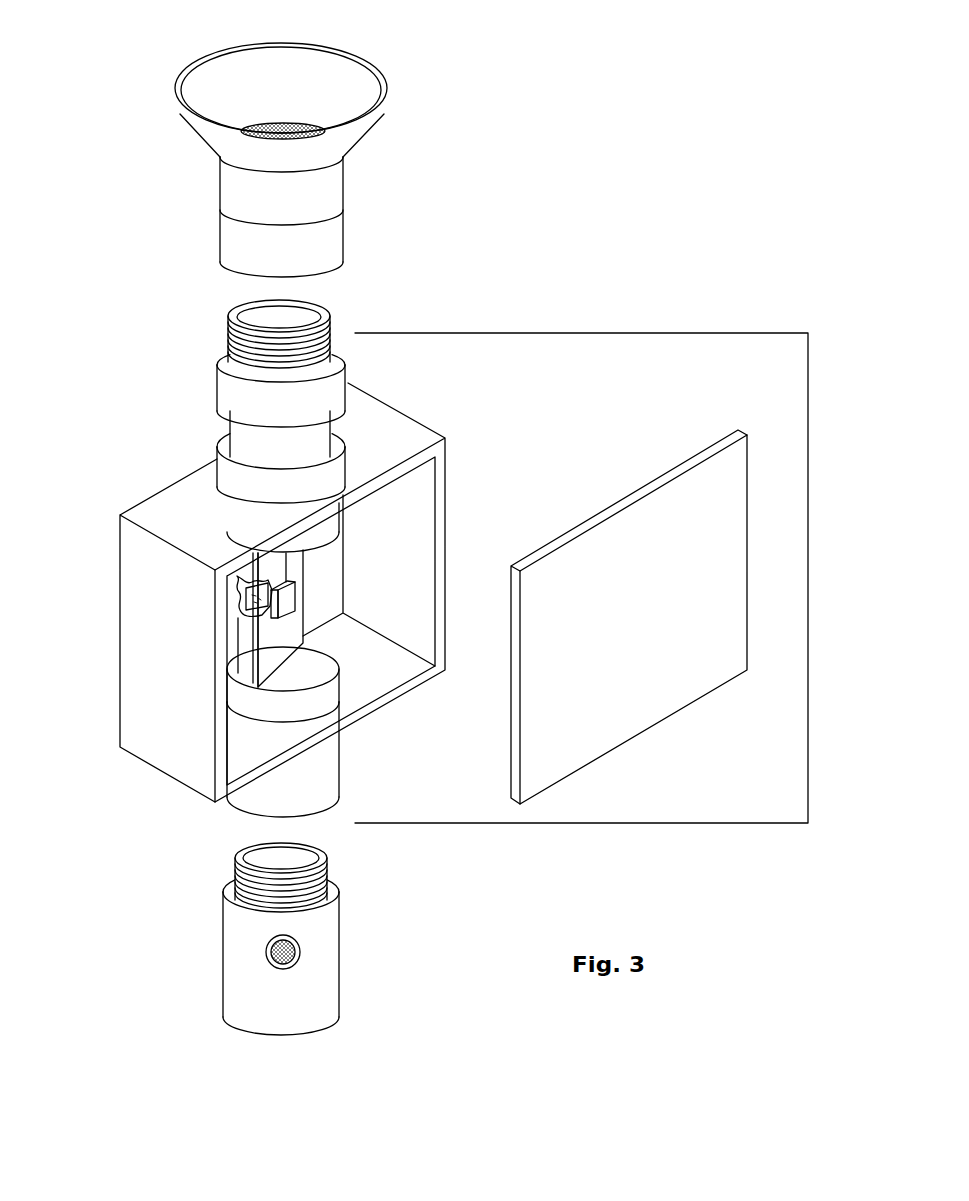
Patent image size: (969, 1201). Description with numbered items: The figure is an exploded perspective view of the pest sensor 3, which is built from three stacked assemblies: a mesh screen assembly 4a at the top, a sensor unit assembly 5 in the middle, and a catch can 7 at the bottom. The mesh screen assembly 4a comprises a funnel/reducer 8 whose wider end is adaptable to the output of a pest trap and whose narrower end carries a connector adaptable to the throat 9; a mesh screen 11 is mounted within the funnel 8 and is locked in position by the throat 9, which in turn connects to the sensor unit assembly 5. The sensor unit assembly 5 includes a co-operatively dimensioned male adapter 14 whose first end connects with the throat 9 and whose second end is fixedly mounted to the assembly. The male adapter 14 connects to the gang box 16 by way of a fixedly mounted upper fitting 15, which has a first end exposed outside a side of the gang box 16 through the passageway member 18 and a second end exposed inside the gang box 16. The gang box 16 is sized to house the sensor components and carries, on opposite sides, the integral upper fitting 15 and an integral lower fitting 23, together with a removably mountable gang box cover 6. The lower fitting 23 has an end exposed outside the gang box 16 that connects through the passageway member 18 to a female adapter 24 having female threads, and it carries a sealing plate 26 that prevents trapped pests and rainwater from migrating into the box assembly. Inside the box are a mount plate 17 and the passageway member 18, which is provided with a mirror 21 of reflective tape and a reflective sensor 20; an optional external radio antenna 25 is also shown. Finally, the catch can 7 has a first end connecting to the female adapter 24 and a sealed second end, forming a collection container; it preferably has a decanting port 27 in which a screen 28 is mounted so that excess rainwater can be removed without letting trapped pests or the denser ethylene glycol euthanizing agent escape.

The sensor 3 is at (495, 257).
The mesh screen assembly 4a is at (377, 130).
The sensor unit assembly 5 is at (810, 551).
The gang box cover 6 is at (622, 731).
The catch can 7 is at (320, 995).
The funnel/reducer 8 is at (335, 185).
The throat 9 is at (333, 238).
The mesh screen 11 is at (291, 128).
The male adapter 14 is at (335, 383).
The upper fitting 15 is at (340, 478).
The gang box 16 is at (428, 428).
The mount plate 17 is at (297, 620).
The passageway member 18 is at (337, 427).
The reflective sensor 20 is at (295, 590).
The mirror 21 is at (246, 598).
The lower fitting 23 is at (333, 740).
The female adapter 24 is at (333, 787).
The external radio antenna 25 is at (190, 520).
The sealing plate 26 is at (333, 668).
The decanting port 27 is at (298, 952).
The screen 28 is at (270, 953).